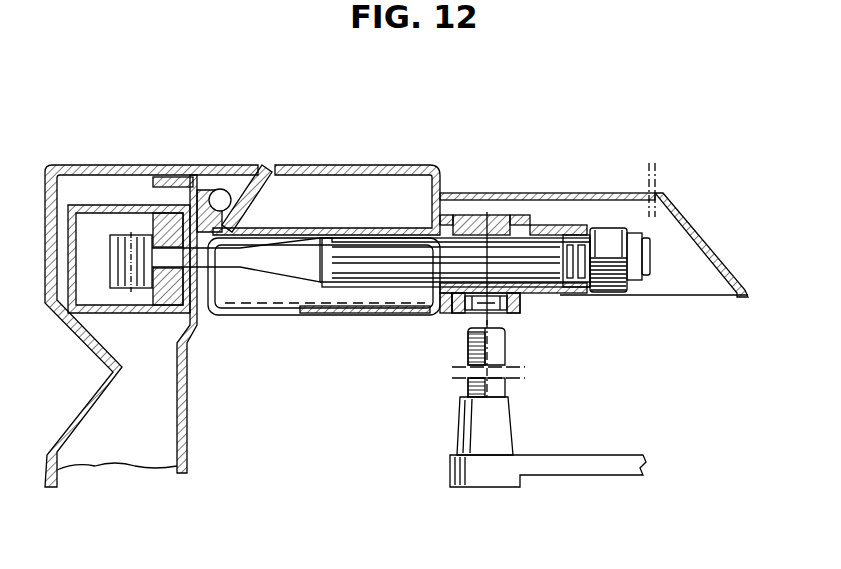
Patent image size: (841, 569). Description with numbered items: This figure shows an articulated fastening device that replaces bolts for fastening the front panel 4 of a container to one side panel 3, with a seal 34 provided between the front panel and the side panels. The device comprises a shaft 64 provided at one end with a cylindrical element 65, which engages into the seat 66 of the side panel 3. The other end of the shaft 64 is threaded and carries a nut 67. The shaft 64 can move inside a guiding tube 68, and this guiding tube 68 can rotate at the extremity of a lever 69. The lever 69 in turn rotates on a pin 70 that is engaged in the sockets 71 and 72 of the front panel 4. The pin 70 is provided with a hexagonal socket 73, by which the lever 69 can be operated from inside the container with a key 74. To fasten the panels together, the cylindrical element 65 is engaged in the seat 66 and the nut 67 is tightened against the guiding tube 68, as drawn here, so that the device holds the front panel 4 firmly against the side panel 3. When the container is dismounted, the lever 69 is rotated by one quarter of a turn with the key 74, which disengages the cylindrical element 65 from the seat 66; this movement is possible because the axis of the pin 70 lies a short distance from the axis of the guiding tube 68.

The side panel 3 is at (151, 326).
The front panel 4 is at (457, 200).
The seal 34 is at (208, 188).
The shaft 64 is at (357, 255).
The cylindrical element 65 is at (128, 232).
The seat 66 is at (167, 312).
The nut 67 is at (617, 233).
The guiding tube 68 is at (570, 290).
The lever 69 is at (565, 228).
The pin 70 is at (517, 297).
The socket 71 is at (440, 190).
The socket 72 is at (443, 307).
The hexagonal socket 73 is at (493, 313).
The key 74 is at (477, 410).